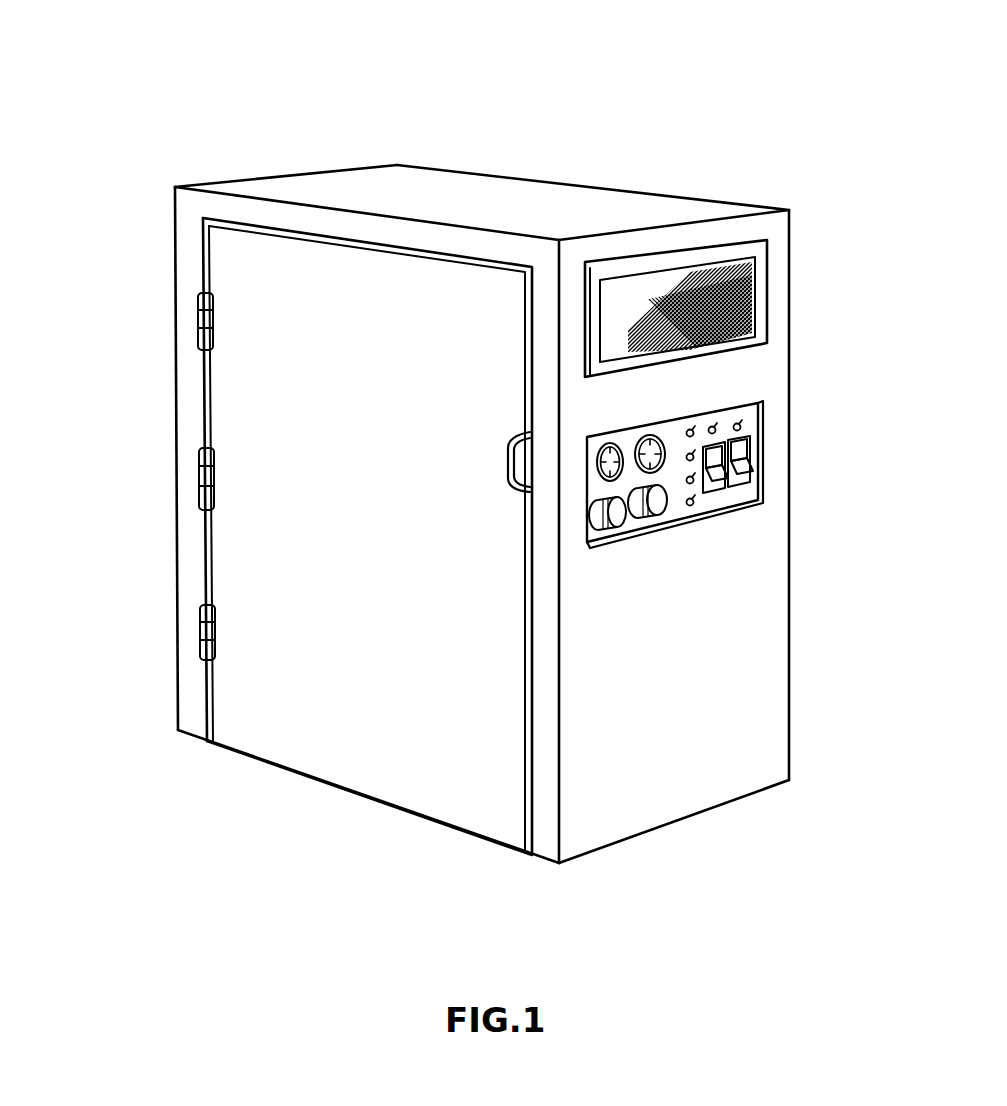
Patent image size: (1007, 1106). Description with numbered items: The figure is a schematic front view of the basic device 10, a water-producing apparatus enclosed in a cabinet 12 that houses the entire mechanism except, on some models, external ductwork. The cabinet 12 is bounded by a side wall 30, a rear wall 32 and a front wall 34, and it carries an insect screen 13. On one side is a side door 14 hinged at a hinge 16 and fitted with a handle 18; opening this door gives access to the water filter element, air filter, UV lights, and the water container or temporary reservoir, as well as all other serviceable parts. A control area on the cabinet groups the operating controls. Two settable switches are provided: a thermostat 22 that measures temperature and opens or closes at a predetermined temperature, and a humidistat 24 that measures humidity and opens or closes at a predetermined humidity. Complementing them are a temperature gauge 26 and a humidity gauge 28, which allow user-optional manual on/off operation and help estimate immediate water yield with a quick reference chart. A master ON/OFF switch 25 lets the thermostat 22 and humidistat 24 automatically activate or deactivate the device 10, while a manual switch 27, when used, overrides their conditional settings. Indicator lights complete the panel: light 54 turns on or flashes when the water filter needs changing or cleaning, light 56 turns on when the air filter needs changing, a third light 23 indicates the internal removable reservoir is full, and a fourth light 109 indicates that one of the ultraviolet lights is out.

The basic device 10 is at (173, 733).
The cabinet 12 is at (413, 183).
The insect screen 13 is at (757, 267).
The side door 14 is at (252, 397).
The hinge 16 is at (203, 340).
The handle 18 is at (518, 463).
The thermostat 22 is at (660, 507).
The third light 23 is at (691, 482).
The humidistat 24 is at (618, 515).
The master ON/OFF switch 25 is at (740, 452).
The temperature gauge 26 is at (618, 445).
The manual switch 27 is at (720, 481).
The humidity gauge 28 is at (660, 437).
The side wall 30 is at (202, 205).
The rear wall 32 is at (265, 176).
The front wall 34 is at (688, 613).
The light 54 is at (738, 427).
The light 56 is at (693, 432).
The fourth light 109 is at (692, 503).